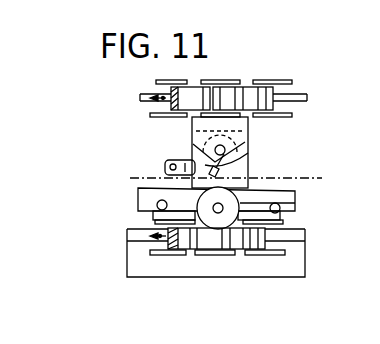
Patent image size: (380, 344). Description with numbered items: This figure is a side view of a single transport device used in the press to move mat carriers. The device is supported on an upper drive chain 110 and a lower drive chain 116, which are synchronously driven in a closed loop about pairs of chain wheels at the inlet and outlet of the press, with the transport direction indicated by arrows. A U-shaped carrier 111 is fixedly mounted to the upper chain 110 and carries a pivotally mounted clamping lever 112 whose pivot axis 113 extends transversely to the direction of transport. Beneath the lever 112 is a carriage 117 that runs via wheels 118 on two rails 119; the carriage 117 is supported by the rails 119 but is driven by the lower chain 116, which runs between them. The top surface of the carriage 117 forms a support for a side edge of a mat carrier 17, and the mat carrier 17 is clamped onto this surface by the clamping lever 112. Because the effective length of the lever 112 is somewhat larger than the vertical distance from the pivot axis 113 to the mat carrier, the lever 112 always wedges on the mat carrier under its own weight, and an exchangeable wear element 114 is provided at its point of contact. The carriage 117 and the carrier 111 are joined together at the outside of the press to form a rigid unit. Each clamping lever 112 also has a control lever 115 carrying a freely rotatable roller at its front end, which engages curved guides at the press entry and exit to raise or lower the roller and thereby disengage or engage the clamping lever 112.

The upper drive chain 110 is at (271, 80).
The U-shaped carrier 111 is at (252, 124).
The clamping lever 112 is at (192, 156).
The pivot axis 113 is at (243, 152).
The exchangeable wear element 114 is at (228, 172).
The control lever 115 is at (165, 166).
The mat carrier 17 is at (322, 178).
The carriage 117 is at (138, 202).
The wheels 118 is at (297, 210).
The rails 119 is at (127, 258).
The lower drive chain 116 is at (262, 260).